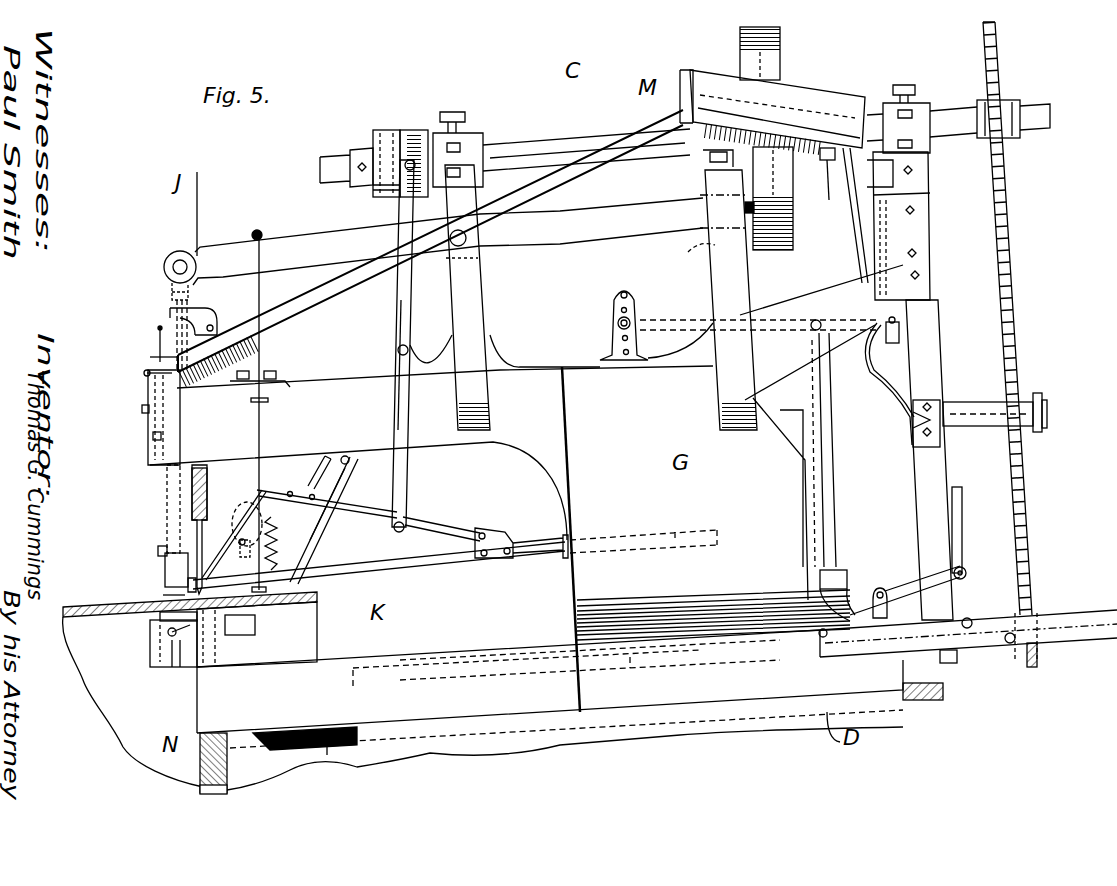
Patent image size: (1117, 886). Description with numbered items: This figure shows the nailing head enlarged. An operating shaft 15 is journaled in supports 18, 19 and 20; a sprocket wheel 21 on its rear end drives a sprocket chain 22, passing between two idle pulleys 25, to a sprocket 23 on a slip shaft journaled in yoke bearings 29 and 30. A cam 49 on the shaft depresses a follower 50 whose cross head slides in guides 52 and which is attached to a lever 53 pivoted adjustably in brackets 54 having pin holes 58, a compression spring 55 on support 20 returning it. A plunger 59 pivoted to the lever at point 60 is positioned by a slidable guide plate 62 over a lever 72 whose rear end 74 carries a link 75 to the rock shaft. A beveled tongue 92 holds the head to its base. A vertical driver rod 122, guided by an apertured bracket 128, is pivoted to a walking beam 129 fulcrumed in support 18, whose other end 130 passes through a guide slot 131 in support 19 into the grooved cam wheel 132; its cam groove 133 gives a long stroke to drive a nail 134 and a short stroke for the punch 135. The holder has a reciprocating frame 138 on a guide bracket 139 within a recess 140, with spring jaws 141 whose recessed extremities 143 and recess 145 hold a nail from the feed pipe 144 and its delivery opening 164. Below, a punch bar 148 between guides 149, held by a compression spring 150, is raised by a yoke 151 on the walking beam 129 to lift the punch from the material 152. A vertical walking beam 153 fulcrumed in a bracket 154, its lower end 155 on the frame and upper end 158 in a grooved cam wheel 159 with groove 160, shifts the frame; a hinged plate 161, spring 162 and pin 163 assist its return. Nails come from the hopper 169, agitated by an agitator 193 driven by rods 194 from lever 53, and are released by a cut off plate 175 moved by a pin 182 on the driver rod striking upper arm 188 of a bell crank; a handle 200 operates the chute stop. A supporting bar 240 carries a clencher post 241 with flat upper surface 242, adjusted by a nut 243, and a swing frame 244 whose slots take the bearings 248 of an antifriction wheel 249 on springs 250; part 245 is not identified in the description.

The operating shaft 15 is at (548, 142).
The support 18 is at (468, 308).
The support 19 is at (735, 290).
The support 20 is at (940, 365).
The sprocket wheel 21 is at (1010, 107).
The sprocket chain 22 is at (1012, 445).
The sprocket 23 is at (1045, 665).
The idle pulleys 25 is at (1033, 390).
The yoke bearing 29 is at (1015, 630).
The yoke bearing 30 is at (1076, 610).
The cam 49 is at (925, 185).
The follower 50 is at (891, 343).
The guides 52 is at (915, 225).
The lever 53 is at (665, 318).
The brackets 54 is at (612, 336).
The compression spring 55 is at (880, 402).
The pin holes 58 is at (620, 294).
The plunger 59 is at (830, 464).
The pivot point 60 is at (820, 322).
The guide plate 62 is at (820, 575).
The lever 72 is at (897, 578).
The rear end 74 is at (965, 569).
The link 75 is at (962, 500).
The beveled tongue 92 is at (945, 690).
The driver rod 122 is at (168, 308).
The apertured bracket 128 is at (210, 314).
The walking beam 129 is at (433, 249).
The end of walking beam 130 is at (745, 208).
The guide slot 131 is at (695, 250).
The grooved cam wheel 132 is at (793, 230).
The cam groove 133 is at (745, 62).
The nail 134 is at (255, 350).
The punch 135 is at (190, 588).
The frame 138 is at (460, 530).
The guide bracket 139 is at (343, 478).
The recess 140 is at (703, 528).
The spring jaws 141 is at (218, 530).
The forward extremities 143 is at (190, 500).
The nail feed pipe 144 is at (172, 525).
The recess 145 is at (160, 552).
The punch bar 148 is at (443, 557).
The guides 149 is at (310, 553).
The compression spring 150 is at (277, 538).
The yoke 151 is at (262, 300).
The material 152 is at (163, 597).
The vertical walking beam 153 is at (400, 317).
The bracket 154 is at (395, 353).
The lower end 155 is at (400, 520).
The upper end 158 is at (407, 190).
The grooved cam wheel 159 is at (382, 130).
The groove 160 is at (412, 128).
The hinged plate 161 is at (348, 456).
The spring 162 is at (325, 456).
The pin 163 is at (303, 490).
The delivery opening 164 is at (165, 565).
The nail hopper 169 is at (778, 100).
The cut off plate 175 is at (148, 390).
The pin 182 is at (150, 357).
The upper arm 188 is at (158, 335).
The agitator 193 is at (827, 160).
The rods 194 is at (855, 220).
The handle 200 is at (147, 373).
The supporting bar 240 is at (550, 681).
The clencher post 241 is at (217, 620).
The flat upper surface 242 is at (251, 558).
The nut 243 is at (200, 653).
The swing frame 244 is at (180, 668).
The pivot 245 is at (167, 634).
The bearings 248 is at (177, 660).
The antifriction wheel 249 is at (167, 617).
The springs 250 is at (200, 640).